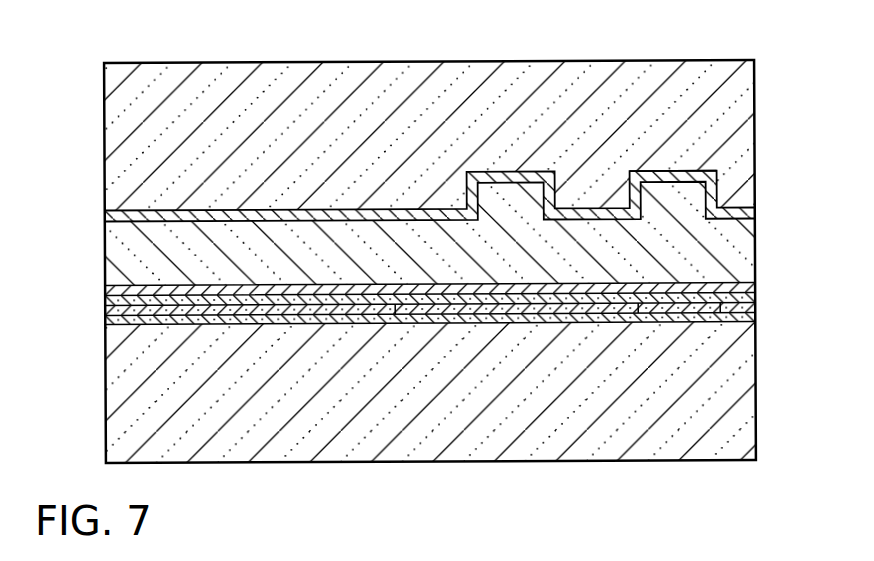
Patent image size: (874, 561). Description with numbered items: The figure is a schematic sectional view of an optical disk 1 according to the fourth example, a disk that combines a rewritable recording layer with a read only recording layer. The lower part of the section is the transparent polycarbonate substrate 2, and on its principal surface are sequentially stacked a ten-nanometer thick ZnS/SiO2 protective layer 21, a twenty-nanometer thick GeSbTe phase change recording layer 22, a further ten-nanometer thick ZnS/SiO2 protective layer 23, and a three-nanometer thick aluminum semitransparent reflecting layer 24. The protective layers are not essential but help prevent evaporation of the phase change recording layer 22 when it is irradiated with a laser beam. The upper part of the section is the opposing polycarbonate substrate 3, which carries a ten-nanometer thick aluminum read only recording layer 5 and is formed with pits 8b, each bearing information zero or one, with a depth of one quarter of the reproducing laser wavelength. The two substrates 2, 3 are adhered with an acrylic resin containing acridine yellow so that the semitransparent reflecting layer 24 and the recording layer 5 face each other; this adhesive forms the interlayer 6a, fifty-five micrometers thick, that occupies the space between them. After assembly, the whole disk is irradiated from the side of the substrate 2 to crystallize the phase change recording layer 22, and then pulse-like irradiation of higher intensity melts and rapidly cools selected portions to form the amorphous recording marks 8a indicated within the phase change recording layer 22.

The optical disk 1 is at (773, 82).
The transparent substrate 2 is at (130, 428).
The opposing substrate 3 is at (118, 125).
The recording layer 5 is at (116, 212).
The interlayer 6a is at (118, 252).
The recording marks 8a is at (363, 318).
The pits 8b is at (660, 170).
The protective layer 21 is at (755, 318).
The phase change recording layer 22 is at (755, 305).
The protective layer 23 is at (755, 296).
The semitransparent reflecting layer 24 is at (755, 288).